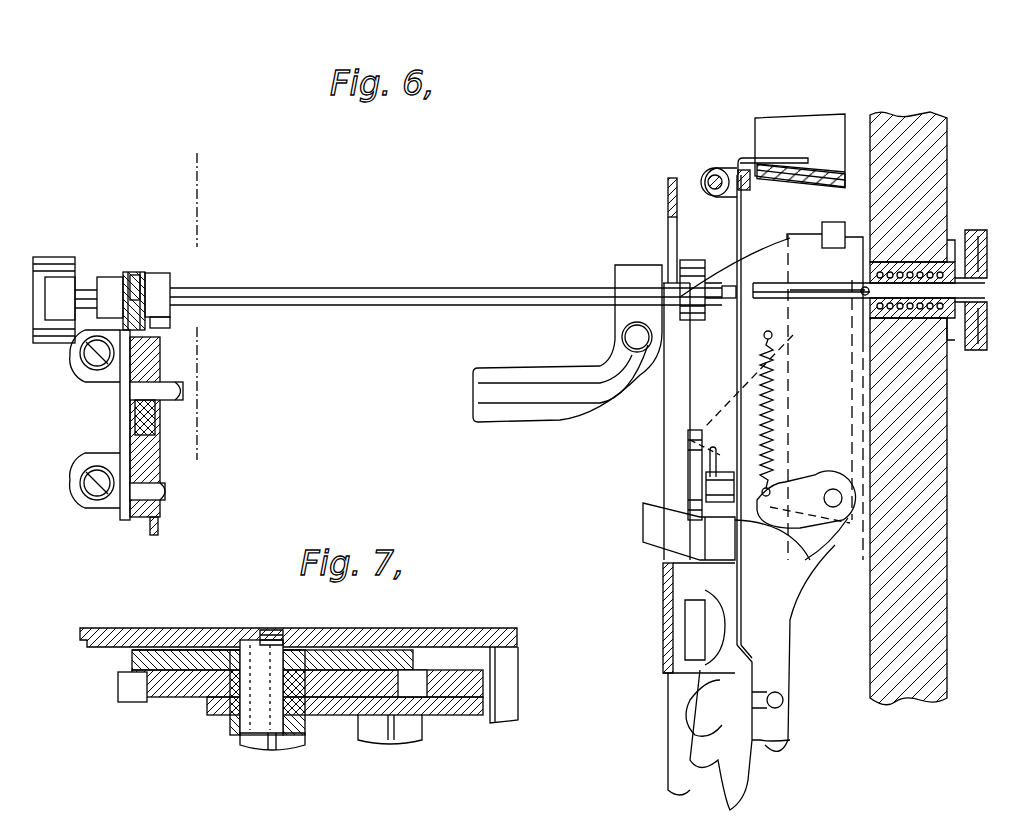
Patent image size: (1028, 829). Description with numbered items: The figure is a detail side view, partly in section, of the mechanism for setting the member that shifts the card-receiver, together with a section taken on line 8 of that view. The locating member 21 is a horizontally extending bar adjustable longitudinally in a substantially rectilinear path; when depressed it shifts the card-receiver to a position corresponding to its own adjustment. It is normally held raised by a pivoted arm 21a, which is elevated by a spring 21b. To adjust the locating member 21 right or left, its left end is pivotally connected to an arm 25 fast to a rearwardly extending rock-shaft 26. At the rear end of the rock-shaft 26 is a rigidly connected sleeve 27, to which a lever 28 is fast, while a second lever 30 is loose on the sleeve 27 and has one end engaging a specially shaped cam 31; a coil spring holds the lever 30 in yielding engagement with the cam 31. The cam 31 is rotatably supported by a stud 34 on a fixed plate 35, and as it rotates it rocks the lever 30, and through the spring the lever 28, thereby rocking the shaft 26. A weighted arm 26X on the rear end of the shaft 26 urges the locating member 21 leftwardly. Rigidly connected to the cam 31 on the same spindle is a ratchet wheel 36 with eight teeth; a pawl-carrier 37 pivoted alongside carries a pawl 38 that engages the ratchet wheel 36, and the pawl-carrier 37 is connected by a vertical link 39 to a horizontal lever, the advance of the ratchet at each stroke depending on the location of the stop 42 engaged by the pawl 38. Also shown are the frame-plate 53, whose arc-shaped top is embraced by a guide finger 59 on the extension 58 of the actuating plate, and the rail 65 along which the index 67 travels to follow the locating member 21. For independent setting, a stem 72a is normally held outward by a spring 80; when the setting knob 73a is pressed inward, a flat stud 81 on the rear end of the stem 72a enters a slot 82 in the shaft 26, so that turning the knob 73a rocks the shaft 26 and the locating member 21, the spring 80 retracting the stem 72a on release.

In FIG. 6, the weighted arm 26X is at (65, 285).
In FIG. 6, the sleeve 27 is at (155, 273).
In FIG. 6, the lever 28 is at (133, 272).
In FIG. 6, the second lever 30 is at (137, 272).
In FIG. 6, the rock-shaft 26 is at (400, 288).
In FIG. 6, the section line 8- 8 is at (216, 200).
In FIG. 6, the fixed plate 35 is at (120, 415).
In FIG. 7, the fixed plate 35 is at (466, 635).
In FIG. 6, the cam 31 is at (135, 440).
In FIG. 7, the cam 31 is at (348, 660).
In FIG. 6, the arm 25 is at (690, 356).
In FIG. 6, the slot 82 is at (728, 286).
In FIG. 6, the frame-plate 53 is at (745, 270).
In FIG. 6, the rail 65 is at (708, 175).
In FIG. 6, the index 67 is at (770, 158).
In FIG. 6, the extension 58 is at (798, 235).
In FIG. 6, the guide finger 59 is at (832, 226).
In FIG. 6, the flat stud 81 is at (753, 290).
In FIG. 6, the stem 72a is at (818, 298).
In FIG. 6, the spring 80 is at (915, 322).
In FIG. 6, the setting knob 73a is at (975, 230).
In FIG. 6, the spring 21b is at (775, 392).
In FIG. 6, the locating member 21 is at (688, 477).
In FIG. 6, the pivoted arm 21a is at (665, 519).
In FIG. 7, the stop 42 is at (496, 720).
In FIG. 7, the pawl 38 is at (480, 685).
In FIG. 7, the ratchet wheel 36 is at (150, 702).
In FIG. 7, the pawl-carrier 37 is at (348, 716).
In FIG. 7, the stud 34 is at (258, 748).
In FIG. 7, the vertical link 39 is at (405, 740).